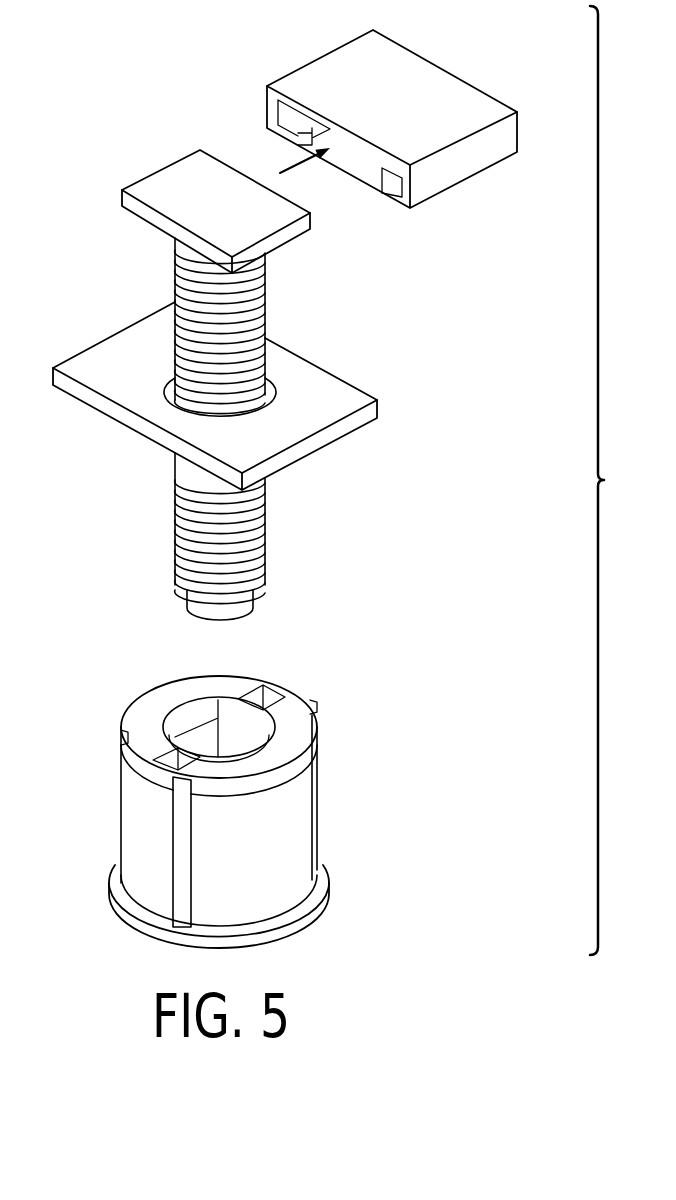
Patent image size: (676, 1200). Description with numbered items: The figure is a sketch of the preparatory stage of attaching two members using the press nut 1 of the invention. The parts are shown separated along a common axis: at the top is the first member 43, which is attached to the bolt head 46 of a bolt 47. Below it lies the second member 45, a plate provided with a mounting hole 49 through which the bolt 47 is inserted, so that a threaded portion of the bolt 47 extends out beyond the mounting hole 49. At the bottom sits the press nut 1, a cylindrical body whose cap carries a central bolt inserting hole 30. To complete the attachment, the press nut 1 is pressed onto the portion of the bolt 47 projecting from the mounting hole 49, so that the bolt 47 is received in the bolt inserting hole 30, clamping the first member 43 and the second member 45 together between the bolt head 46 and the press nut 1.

The press nut 1 is at (358, 801).
The bolt inserting hole 30 is at (217, 713).
The first member 43 is at (347, 68).
The second member 45 is at (337, 390).
The bolt head 46 is at (183, 175).
The bolt 47 is at (240, 293).
The mounting hole 49 is at (270, 388).